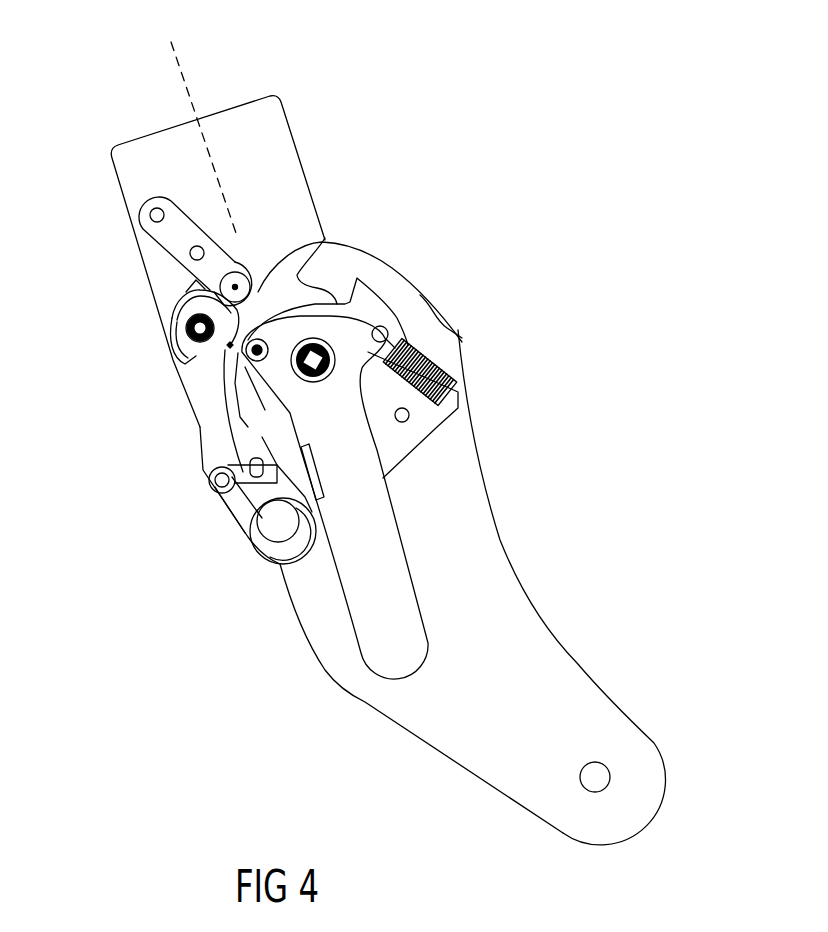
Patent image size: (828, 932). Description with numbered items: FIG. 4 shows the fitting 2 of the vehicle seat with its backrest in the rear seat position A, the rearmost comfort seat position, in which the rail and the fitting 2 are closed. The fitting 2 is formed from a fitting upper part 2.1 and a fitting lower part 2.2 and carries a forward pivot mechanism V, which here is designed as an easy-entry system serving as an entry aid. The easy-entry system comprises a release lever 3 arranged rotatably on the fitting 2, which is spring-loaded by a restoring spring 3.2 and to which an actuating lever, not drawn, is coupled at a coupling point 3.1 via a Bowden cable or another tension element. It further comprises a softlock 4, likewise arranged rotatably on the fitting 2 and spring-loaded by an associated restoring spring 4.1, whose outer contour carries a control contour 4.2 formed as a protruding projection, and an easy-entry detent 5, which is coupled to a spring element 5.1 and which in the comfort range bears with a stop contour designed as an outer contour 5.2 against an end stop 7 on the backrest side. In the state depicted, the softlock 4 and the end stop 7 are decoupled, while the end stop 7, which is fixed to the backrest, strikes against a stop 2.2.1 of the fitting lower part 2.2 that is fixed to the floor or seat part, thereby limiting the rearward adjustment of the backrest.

The fitting 2 is at (571, 184).
The fitting upper part 2.1 is at (261, 121).
The fitting lower part 2.2 is at (540, 673).
The stop 2.2.1 is at (185, 291).
The release lever 3 is at (372, 626).
The coupling point 3.1 is at (244, 353).
The restoring spring 3.2 is at (451, 382).
The softlock 4 is at (214, 425).
The restoring spring 4.1 is at (265, 557).
The control contour 4.2 is at (321, 236).
The easy-entry detent 5 is at (380, 312).
The spring element 5.1 is at (172, 319).
The outer contour 5.2 is at (251, 284).
The end stop 7 is at (141, 240).
The seat position A is at (199, 124).
The forward pivot mechanism V is at (480, 168).